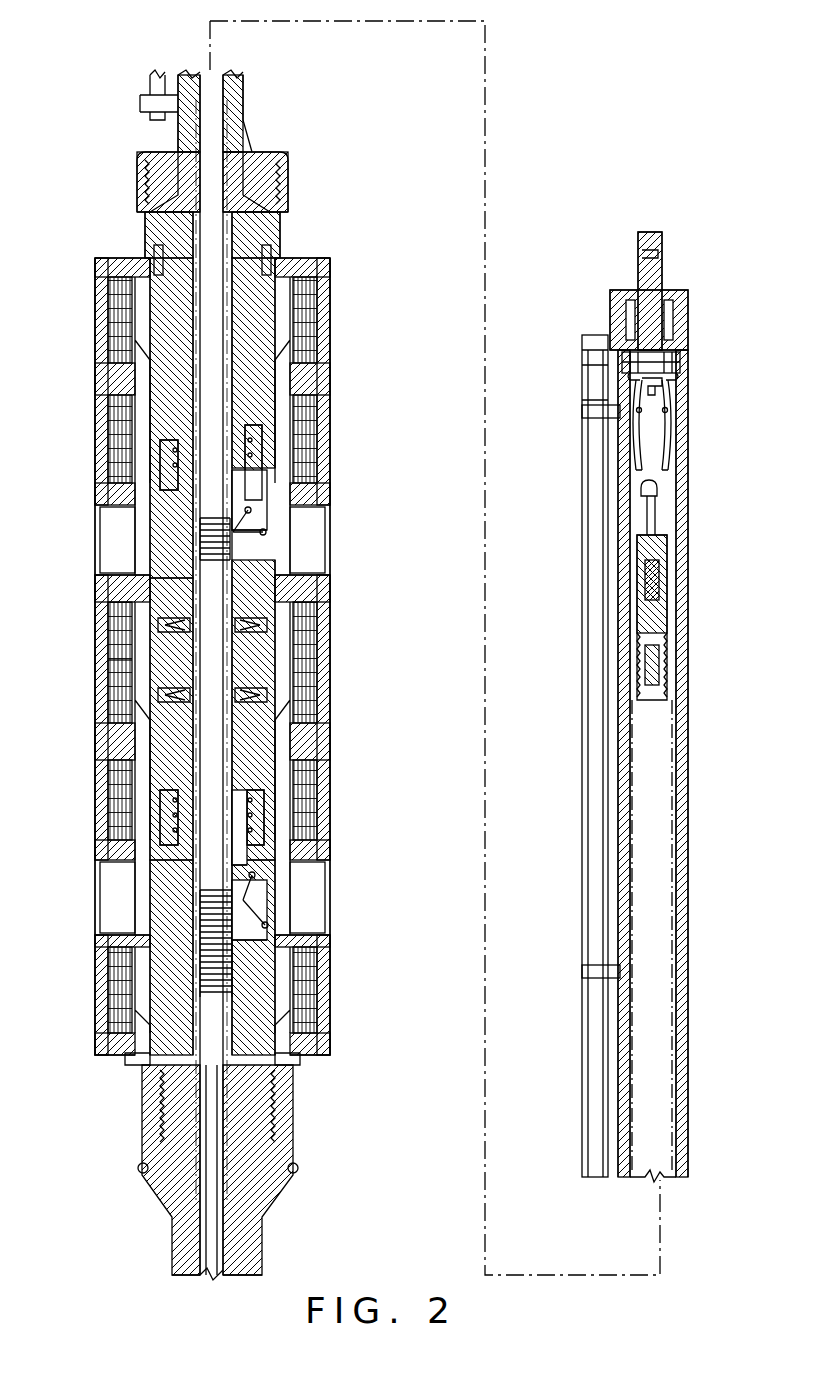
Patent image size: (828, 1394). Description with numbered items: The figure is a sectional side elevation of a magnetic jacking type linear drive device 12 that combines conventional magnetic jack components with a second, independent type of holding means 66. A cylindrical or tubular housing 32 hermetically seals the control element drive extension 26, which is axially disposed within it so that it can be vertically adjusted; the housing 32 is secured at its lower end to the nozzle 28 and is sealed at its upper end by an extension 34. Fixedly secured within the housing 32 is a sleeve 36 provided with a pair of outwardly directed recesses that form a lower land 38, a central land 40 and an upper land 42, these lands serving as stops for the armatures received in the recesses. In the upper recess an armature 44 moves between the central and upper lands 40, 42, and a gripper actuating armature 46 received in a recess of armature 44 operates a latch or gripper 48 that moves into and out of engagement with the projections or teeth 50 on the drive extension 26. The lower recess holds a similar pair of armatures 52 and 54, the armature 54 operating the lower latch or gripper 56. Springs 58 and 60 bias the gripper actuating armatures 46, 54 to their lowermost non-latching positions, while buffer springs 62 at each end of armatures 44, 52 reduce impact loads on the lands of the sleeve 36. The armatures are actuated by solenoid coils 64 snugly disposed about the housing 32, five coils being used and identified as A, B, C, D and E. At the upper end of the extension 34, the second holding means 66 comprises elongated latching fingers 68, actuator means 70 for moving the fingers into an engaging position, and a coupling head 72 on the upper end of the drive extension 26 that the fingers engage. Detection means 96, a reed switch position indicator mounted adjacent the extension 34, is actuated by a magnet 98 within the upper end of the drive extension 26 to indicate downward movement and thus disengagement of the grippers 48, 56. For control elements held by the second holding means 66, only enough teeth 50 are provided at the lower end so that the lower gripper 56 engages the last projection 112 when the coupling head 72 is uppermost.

The magnetic jacking type linear drive device 12 is at (385, 560).
The control element drive extension 26 is at (228, 1215).
The nozzle 28 is at (262, 1252).
The tubular housing 32 is at (282, 222).
The extension 34 is at (243, 128).
The sleeve 36 is at (138, 226).
The lower land 38 is at (293, 1075).
The central land 40 is at (262, 655).
The upper land 42 is at (263, 258).
The armature 44 is at (275, 376).
The gripper actuating armature 46 is at (258, 462).
The latch or gripper 48 is at (268, 528).
The projections or teeth 50 is at (225, 528).
The armature 52 is at (270, 740).
The armature 54 is at (285, 828).
The lower latch or gripper 56 is at (245, 894).
The spring 58 is at (205, 455).
The spring 60 is at (180, 800).
The buffer springs 62 is at (155, 318).
The solenoid coils 64 is at (100, 352).
The second holding means 66 is at (686, 435).
The latching fingers 68 is at (630, 440).
The actuator means 70 is at (686, 361).
The coupling head 72 is at (658, 488).
The detection means 96 is at (590, 800).
The magnet 98 is at (660, 660).
The last projection 112 is at (148, 1070).
The coil A is at (320, 318).
The coil B is at (318, 425).
The coil C is at (315, 678).
The coil D is at (318, 800).
The coil E is at (320, 1020).